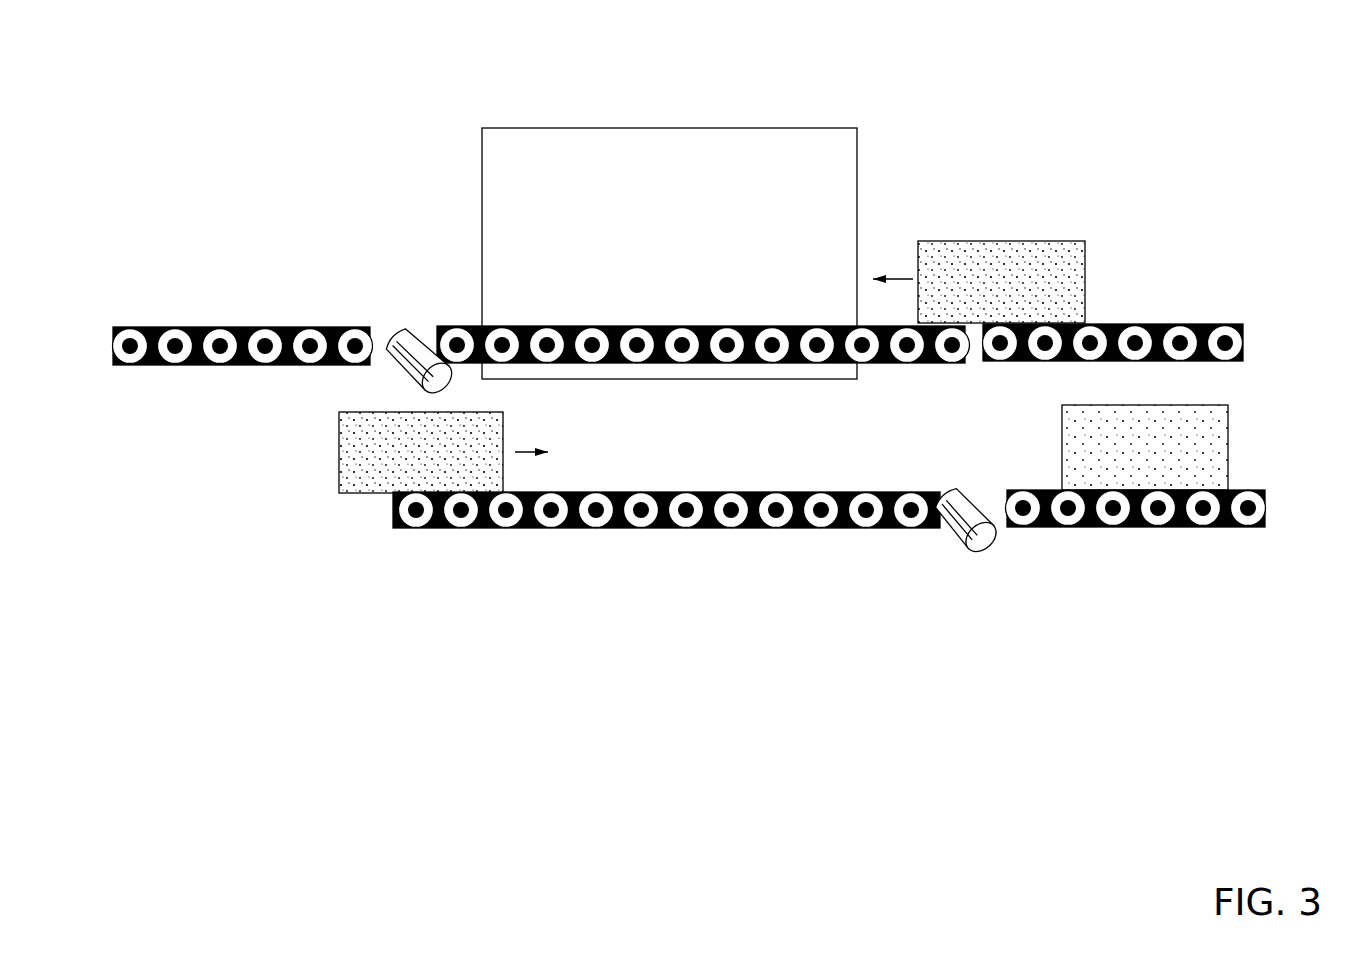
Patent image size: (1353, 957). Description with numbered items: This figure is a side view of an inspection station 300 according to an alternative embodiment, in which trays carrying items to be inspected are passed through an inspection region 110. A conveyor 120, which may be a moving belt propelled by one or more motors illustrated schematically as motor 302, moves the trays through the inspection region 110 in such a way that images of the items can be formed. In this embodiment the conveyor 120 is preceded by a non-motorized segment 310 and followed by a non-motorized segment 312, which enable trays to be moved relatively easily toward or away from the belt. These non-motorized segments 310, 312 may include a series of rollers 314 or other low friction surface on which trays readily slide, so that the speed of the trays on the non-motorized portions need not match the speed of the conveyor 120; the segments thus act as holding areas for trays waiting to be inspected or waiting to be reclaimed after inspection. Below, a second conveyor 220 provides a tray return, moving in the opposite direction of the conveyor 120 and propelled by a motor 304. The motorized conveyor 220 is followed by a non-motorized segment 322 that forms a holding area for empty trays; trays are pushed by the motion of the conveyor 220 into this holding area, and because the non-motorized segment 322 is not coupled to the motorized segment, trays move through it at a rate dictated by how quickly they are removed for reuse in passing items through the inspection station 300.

The inspection station 300 is at (1007, 113).
The inspection region 110 is at (670, 130).
The conveyor 120 is at (455, 323).
The conveyor 220 is at (658, 493).
The motor 302 is at (400, 327).
The motor 304 is at (957, 542).
The non-motorized segment 310 is at (1187, 325).
The non-motorized segment 312 is at (231, 363).
The rollers 314 is at (170, 354).
The non-motorized segment 322 is at (1255, 528).